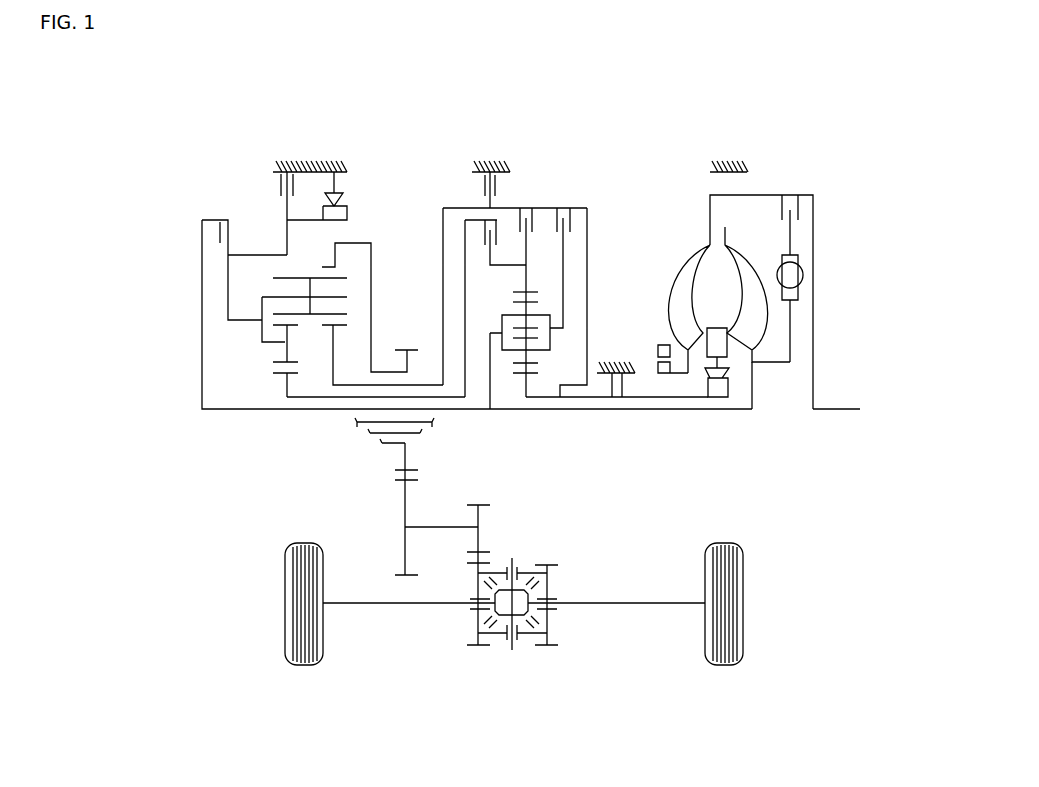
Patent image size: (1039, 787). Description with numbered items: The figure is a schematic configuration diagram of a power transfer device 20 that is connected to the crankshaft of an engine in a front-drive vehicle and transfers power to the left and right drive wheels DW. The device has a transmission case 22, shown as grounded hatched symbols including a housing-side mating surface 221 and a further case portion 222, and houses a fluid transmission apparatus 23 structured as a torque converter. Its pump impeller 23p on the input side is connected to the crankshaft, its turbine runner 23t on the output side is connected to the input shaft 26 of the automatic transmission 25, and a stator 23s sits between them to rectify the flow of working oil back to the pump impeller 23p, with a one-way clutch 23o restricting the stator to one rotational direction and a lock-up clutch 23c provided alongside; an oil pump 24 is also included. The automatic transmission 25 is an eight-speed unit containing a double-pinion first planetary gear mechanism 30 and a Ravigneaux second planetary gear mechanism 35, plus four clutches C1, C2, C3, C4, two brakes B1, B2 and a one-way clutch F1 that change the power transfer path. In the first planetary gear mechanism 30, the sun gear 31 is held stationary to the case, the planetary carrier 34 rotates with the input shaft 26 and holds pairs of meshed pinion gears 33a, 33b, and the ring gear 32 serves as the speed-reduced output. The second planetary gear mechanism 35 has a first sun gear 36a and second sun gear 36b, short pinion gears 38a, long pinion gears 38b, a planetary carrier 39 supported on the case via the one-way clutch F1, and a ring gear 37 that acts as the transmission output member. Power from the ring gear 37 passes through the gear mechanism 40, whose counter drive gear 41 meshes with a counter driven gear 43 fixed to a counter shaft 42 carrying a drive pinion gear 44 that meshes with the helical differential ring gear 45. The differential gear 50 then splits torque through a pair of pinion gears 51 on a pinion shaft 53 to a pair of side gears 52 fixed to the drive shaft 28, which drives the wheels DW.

The power transfer device 20 is at (569, 136).
The transmission case 22 is at (300, 163).
The transmission case (fixed member) 222 is at (488, 162).
The housing-side mating surface 221 is at (728, 160).
The fluid transmission apparatus 23 is at (704, 218).
The pump impeller 23p is at (687, 247).
The turbine runner 23t is at (746, 240).
The stator 23s is at (717, 327).
The lock-up clutch 23c is at (800, 237).
The one-way clutch 23o is at (737, 389).
The oil pump 24 is at (654, 369).
The automatic transmission 25 is at (414, 186).
The input shaft 26 is at (728, 410).
The drive shaft 28 is at (380, 605).
The first planetary gear mechanism 30 is at (491, 319).
The sun gear 31 is at (518, 376).
The ring gear 32 is at (516, 293).
The pinion gear 33a is at (540, 333).
The pinion gear 33b is at (538, 301).
The planetary carrier 34 is at (548, 339).
The second planetary gear mechanism 35 is at (255, 372).
The first sun gear 36a is at (282, 380).
The second sun gear 36b is at (332, 332).
The ring gear 37 is at (342, 266).
The short pinion gear 38a is at (281, 350).
The long pinion gear 38b is at (277, 278).
The planetary carrier 39 is at (261, 299).
The gear mechanism 40 is at (392, 496).
The counter drive gear 41 is at (393, 465).
The counter shaft 42 is at (433, 525).
The counter driven gear 43 is at (404, 526).
The drive pinion gear 44 is at (480, 505).
The differential ring gear 45 is at (472, 648).
The differential gear 50 is at (568, 583).
The pinion gear 51 is at (515, 568).
The side gear 52 is at (492, 592).
The pinion shaft 53 is at (510, 650).
The brake B1 is at (498, 192).
The brake B2 is at (280, 190).
The clutch C1 is at (484, 232).
The clutch C2 is at (218, 235).
The clutch C3 is at (538, 222).
The clutch C4 is at (570, 222).
The one-way clutch F1 is at (347, 212).
The drive wheel DW is at (285, 603).